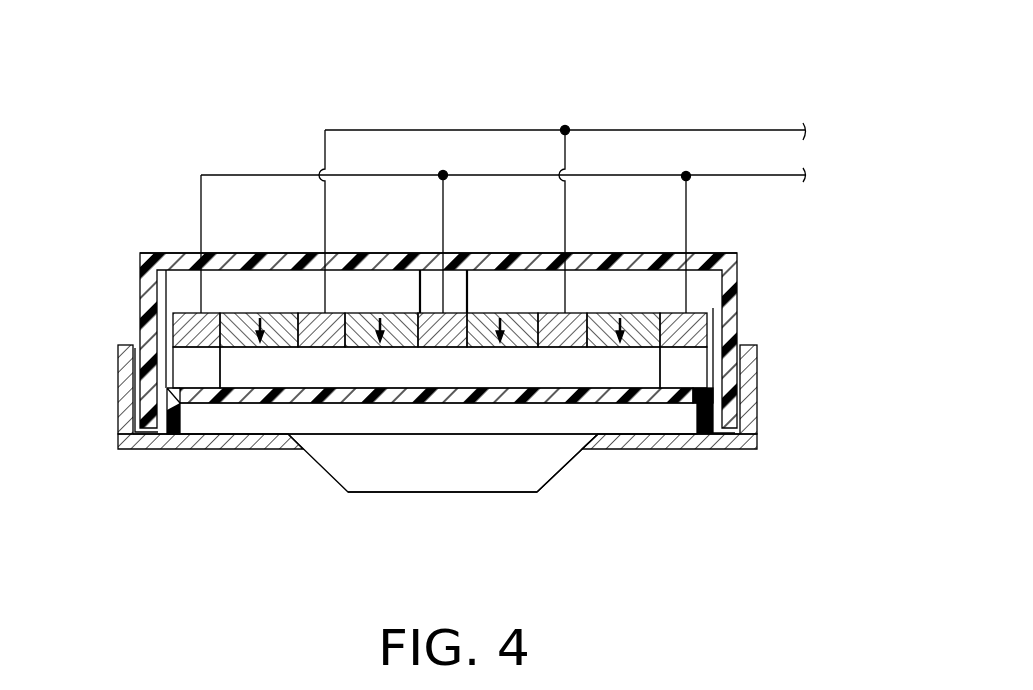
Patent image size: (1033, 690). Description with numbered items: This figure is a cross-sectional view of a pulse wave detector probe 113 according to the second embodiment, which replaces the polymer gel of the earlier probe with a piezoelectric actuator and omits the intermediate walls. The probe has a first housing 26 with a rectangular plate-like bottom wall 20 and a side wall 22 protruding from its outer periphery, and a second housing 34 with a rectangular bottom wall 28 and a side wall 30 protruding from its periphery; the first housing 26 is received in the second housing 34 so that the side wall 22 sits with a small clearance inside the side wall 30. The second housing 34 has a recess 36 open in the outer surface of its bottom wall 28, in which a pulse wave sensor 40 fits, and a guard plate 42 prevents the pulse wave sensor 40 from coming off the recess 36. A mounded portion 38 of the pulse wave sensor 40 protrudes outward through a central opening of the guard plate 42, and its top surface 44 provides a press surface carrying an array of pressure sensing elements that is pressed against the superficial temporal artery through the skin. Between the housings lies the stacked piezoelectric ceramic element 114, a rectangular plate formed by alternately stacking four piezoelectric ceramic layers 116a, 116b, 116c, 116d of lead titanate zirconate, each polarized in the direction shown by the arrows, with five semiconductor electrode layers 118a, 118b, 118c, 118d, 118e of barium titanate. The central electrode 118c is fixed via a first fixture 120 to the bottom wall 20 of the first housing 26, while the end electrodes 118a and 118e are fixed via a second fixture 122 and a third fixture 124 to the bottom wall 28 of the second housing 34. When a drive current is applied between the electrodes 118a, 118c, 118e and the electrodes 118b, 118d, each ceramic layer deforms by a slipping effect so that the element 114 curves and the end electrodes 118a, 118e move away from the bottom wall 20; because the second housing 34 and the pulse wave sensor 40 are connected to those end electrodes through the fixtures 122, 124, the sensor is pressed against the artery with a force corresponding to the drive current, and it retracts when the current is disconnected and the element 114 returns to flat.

The pulse wave detector probe 113 is at (201, 57).
The bottom wall 20 is at (168, 253).
The side wall 22 is at (148, 310).
The first housing 26 is at (748, 243).
The stacked piezoelectric ceramic element 114 is at (720, 303).
The bottom wall 28 is at (148, 443).
The side wall 30 is at (125, 397).
The second housing 34 is at (772, 460).
The recess 36 is at (256, 398).
The mounded portion 38 is at (408, 477).
The pulse wave sensor 40 is at (551, 509).
The guard plate 42 is at (632, 442).
The top surface 44 is at (455, 495).
The piezoelectric ceramic layer 116a is at (277, 315).
The piezoelectric ceramic layer 116b is at (400, 315).
The piezoelectric ceramic layer 116c is at (520, 315).
The piezoelectric ceramic layer 116d is at (638, 315).
The semiconductor electrode layer 118a is at (173, 328).
The semiconductor electrode layer 118b is at (315, 347).
The semiconductor electrode layer 118c is at (432, 347).
The semiconductor electrode layer 118d is at (552, 347).
The semiconductor electrode layer 118e is at (707, 330).
The first fixture 120 is at (453, 282).
The second fixture 122 is at (193, 372).
The third fixture 124 is at (678, 375).